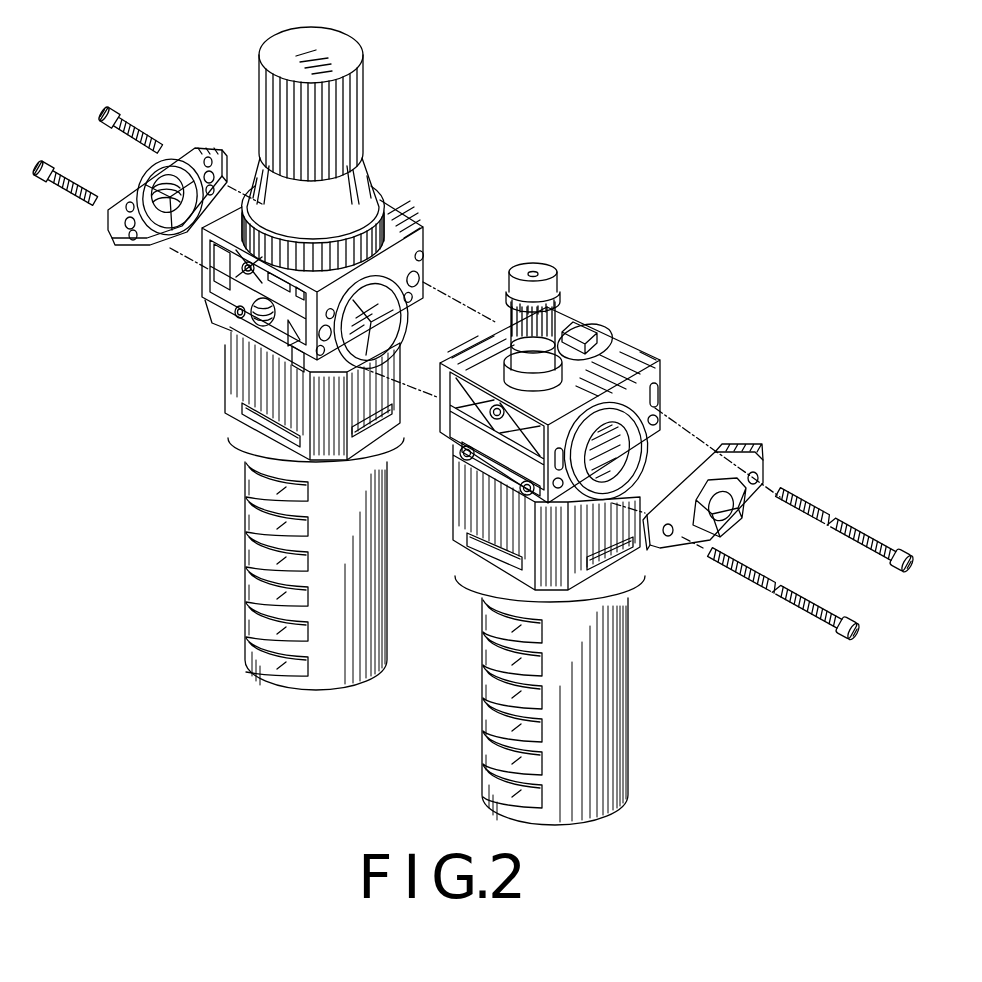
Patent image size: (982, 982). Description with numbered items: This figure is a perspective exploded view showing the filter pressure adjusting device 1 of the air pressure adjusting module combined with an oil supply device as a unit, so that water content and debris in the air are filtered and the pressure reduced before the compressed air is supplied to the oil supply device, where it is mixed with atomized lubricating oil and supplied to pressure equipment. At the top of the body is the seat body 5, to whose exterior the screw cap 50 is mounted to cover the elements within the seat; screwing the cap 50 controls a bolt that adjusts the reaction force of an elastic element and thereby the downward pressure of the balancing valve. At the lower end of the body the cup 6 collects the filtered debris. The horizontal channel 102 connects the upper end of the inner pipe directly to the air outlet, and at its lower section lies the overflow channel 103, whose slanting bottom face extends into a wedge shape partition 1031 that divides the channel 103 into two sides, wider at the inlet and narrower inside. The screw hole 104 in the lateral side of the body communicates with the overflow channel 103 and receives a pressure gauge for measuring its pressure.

The filter pressure adjusting device 1 is at (342, 399).
The seat body 5 is at (358, 185).
The screw cap 50 is at (350, 110).
The cup 6 is at (322, 668).
The horizontal channel 102 is at (372, 312).
The overflow channel 103 is at (383, 327).
The wedge shape partition 1031 is at (335, 337).
The screw hole 104 is at (262, 328).